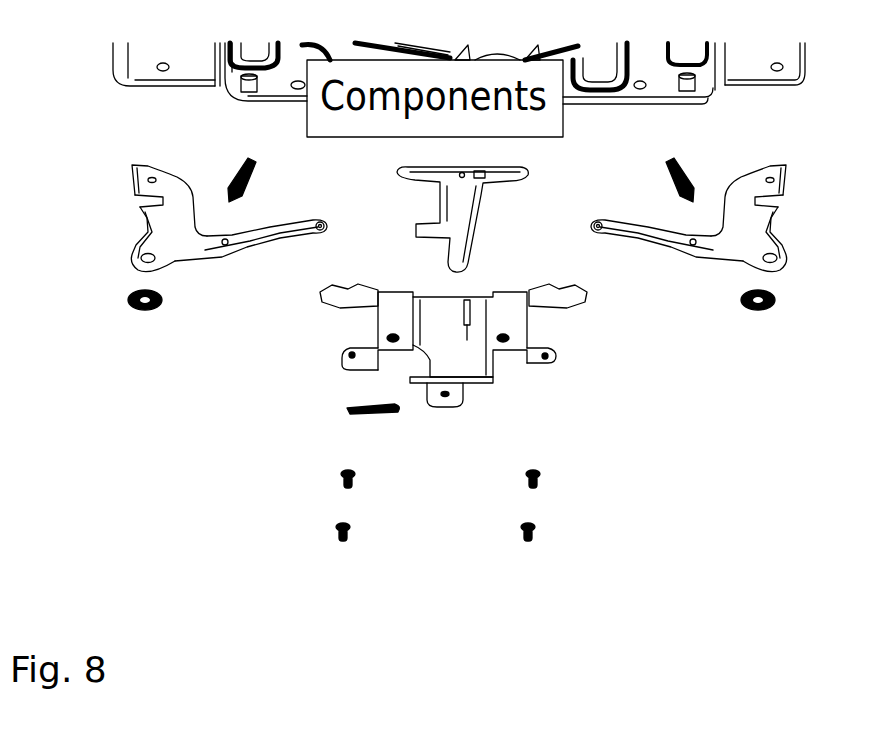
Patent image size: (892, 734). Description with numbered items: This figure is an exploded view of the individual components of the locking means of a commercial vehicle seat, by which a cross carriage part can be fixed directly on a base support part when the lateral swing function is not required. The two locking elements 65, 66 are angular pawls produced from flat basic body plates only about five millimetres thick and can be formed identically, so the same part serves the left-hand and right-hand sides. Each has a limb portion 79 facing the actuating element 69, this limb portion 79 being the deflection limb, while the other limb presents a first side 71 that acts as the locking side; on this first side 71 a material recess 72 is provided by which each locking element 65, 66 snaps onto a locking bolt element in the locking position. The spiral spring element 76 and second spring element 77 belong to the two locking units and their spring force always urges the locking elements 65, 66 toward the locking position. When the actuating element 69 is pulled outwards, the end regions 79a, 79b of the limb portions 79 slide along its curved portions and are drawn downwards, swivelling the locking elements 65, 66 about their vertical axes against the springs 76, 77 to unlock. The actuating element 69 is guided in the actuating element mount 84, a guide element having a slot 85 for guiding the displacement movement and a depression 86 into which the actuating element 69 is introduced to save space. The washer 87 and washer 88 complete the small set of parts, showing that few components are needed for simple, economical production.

The locking element 65 is at (710, 243).
The locking element 66 is at (185, 245).
The actuating element 69 is at (468, 205).
The first side 71 is at (132, 225).
The material recess 72 is at (140, 200).
The spiral spring element 76 is at (695, 163).
The second spring element 77 is at (240, 170).
The limb portion 79 is at (272, 233).
The end of the limb element 79a is at (316, 230).
The end of the limb element 79b is at (598, 222).
The actuating element mount 84 is at (428, 360).
The slot 85 is at (472, 323).
The depression 86 is at (430, 323).
The washer 87 is at (147, 312).
The washer 88 is at (758, 312).